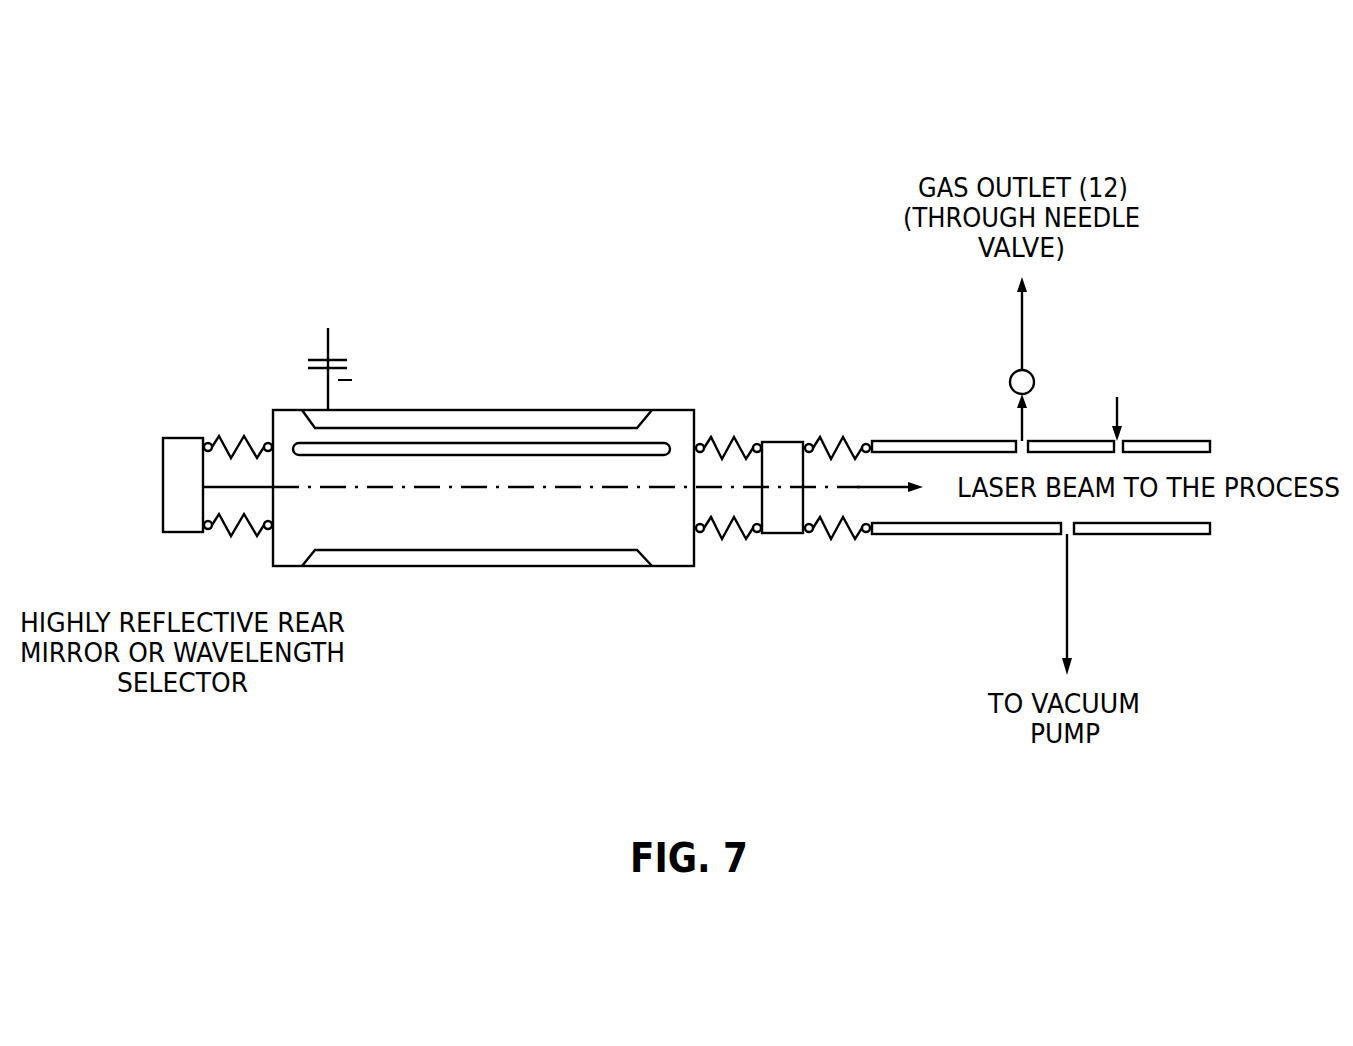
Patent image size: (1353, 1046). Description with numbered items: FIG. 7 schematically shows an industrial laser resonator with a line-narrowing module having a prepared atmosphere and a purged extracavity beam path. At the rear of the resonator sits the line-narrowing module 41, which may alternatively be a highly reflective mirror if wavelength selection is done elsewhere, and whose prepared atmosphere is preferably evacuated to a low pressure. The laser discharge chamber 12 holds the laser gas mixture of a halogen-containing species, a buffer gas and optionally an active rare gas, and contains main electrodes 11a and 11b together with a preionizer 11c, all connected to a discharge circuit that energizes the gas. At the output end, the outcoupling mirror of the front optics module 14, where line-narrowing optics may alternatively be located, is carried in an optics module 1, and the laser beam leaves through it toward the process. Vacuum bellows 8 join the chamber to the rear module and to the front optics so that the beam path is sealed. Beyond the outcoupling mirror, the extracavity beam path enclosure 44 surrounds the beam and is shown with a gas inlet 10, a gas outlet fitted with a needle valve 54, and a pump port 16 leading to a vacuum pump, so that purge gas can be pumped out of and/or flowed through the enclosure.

The vacuum bellows 8 is at (804, 408).
The laser discharge chamber 12 is at (469, 390).
The line-narrowing module 41 is at (182, 438).
The main electrode 11a is at (578, 420).
The main electrode 11b is at (571, 560).
The preionizer 11c is at (597, 456).
The optics module 1 is at (778, 442).
The front optics module 14 is at (786, 533).
The extracavity beam path enclosure 44 is at (943, 441).
The needle valve 54 is at (1011, 373).
The laser chamber 10 is at (1119, 371).
The pump port 16 is at (1057, 546).